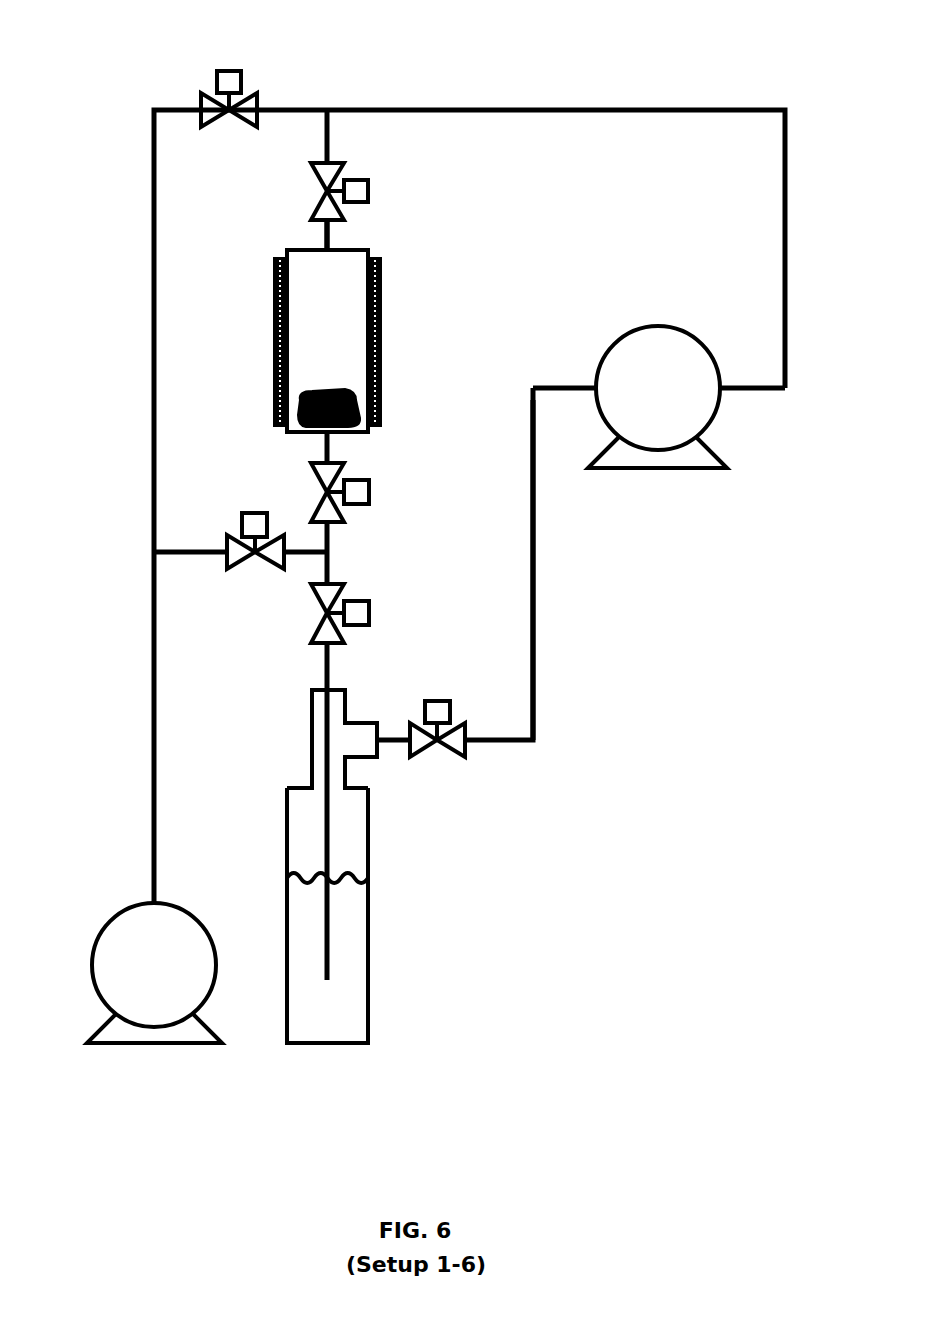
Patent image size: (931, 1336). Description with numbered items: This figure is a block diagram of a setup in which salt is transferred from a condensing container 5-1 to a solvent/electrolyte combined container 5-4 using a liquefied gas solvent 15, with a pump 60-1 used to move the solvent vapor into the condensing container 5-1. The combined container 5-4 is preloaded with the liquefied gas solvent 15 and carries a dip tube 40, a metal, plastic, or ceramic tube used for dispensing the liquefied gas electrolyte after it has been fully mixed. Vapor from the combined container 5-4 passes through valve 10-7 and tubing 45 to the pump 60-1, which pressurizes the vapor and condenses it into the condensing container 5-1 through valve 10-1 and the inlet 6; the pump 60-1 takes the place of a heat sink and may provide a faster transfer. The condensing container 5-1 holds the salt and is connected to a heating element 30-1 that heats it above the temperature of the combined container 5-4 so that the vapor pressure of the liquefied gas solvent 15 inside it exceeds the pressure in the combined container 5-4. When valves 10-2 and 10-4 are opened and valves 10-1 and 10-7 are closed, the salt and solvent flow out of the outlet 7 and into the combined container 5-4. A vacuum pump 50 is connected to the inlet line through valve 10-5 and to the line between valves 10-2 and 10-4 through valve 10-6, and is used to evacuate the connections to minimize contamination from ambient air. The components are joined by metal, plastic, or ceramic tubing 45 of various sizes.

The valve 10-5 is at (217, 72).
The valve 10-1 is at (367, 183).
The valve 10-2 is at (370, 483).
The valve 10-4 is at (370, 612).
The valve 10-6 is at (260, 558).
The valve 10-7 is at (448, 750).
The condensing container 5-1 is at (367, 250).
The inlet 6 is at (322, 250).
The outlet 7 is at (328, 432).
The heating element 30-1 is at (382, 327).
The pump 60-1 is at (620, 335).
The tubing 45 is at (533, 612).
The dip tube 40 is at (328, 742).
The solvent/electrolyte combined container 5-4 is at (368, 850).
The liquefied gas solvent 15 is at (343, 963).
The vacuum pump 50 is at (182, 908).